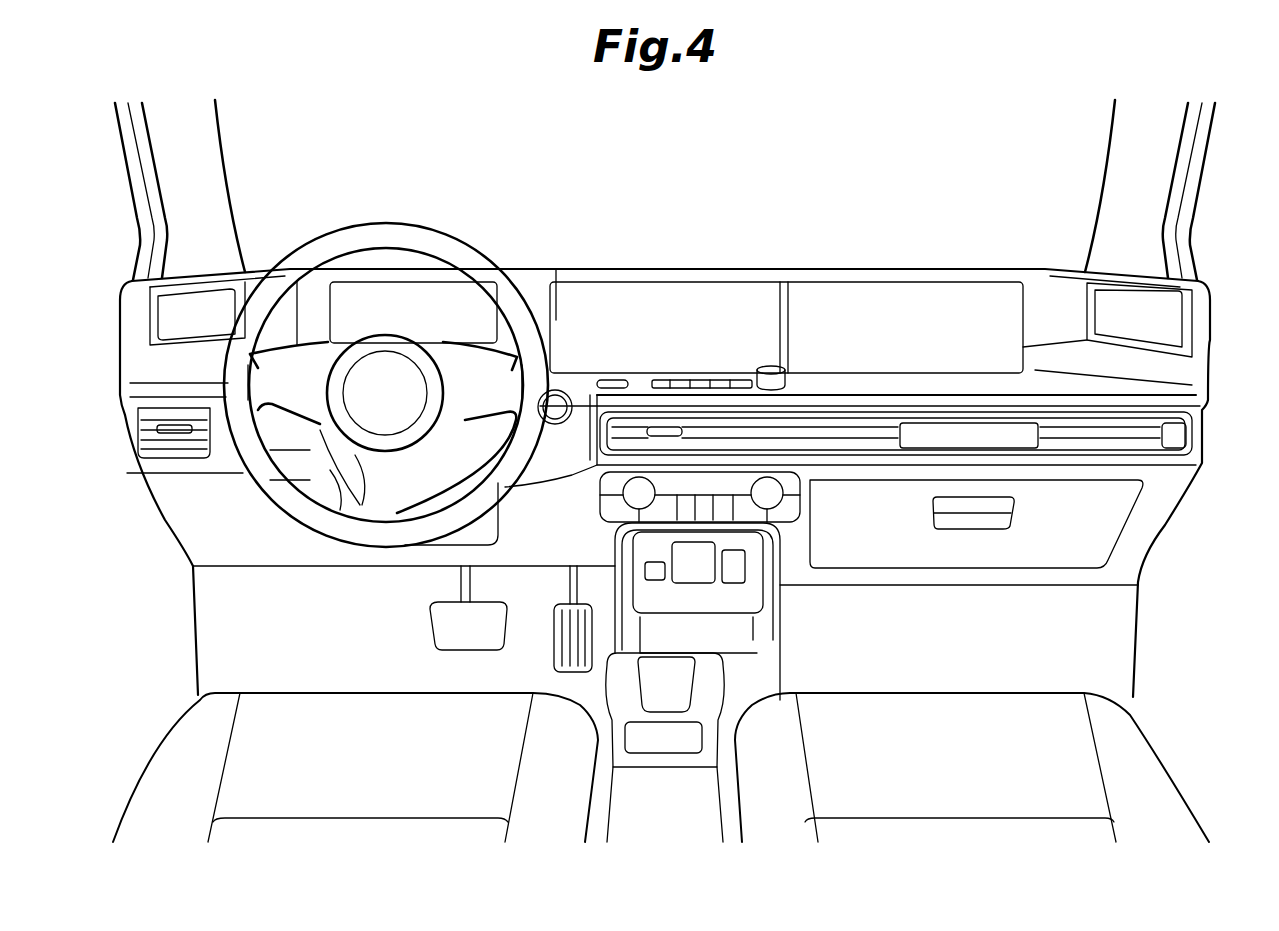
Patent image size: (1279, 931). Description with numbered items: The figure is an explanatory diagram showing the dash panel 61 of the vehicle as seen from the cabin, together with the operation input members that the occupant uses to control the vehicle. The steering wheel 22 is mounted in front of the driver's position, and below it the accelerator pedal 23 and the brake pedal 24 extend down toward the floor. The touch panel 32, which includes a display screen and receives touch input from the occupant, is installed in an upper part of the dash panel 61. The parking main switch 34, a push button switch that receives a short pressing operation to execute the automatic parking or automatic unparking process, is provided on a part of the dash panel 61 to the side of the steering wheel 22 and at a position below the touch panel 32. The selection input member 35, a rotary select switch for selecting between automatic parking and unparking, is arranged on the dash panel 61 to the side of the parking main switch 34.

The steering wheel 22 is at (423, 237).
The accelerator pedal 23 is at (555, 648).
The brake pedal 24 is at (430, 618).
The touch panel 32 is at (372, 297).
The parking main switch 34 is at (596, 380).
The selection input member 35 is at (767, 368).
The dash panel 61 is at (528, 272).